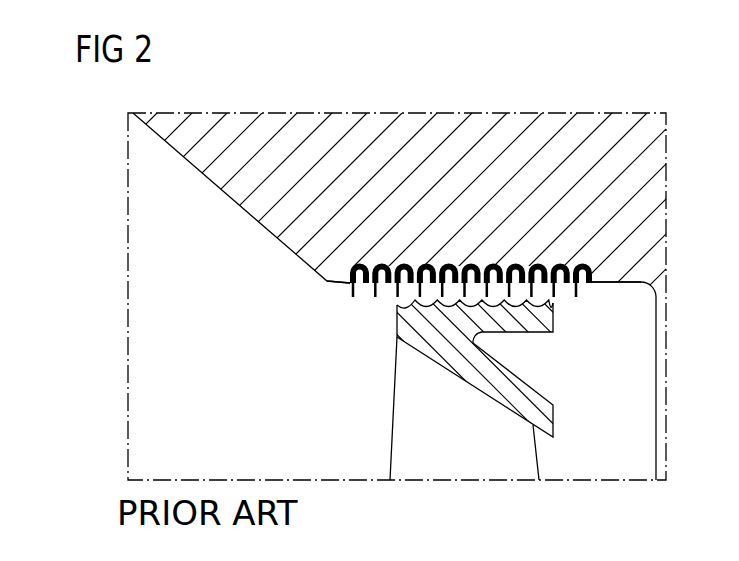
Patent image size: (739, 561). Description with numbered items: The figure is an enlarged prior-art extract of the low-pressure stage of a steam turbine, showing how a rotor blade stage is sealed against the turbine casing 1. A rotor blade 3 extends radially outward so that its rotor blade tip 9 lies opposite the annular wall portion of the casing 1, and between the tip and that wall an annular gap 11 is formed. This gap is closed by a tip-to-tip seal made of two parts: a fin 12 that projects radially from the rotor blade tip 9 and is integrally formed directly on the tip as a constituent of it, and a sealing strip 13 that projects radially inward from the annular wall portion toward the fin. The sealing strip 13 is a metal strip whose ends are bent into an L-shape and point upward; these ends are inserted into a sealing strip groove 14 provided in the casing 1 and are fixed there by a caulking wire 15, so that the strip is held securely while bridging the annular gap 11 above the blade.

The casing 1 is at (313, 129).
The rotor blade 3 is at (448, 467).
The rotor blade tip 9 is at (500, 380).
The annular gap 11 is at (517, 290).
The fin 12 is at (450, 298).
The sealing strip 13 is at (350, 291).
The sealing strip groove 14 is at (350, 274).
The caulking wire 15 is at (357, 284).